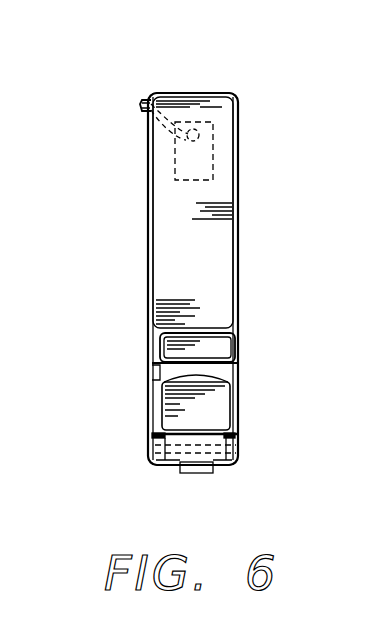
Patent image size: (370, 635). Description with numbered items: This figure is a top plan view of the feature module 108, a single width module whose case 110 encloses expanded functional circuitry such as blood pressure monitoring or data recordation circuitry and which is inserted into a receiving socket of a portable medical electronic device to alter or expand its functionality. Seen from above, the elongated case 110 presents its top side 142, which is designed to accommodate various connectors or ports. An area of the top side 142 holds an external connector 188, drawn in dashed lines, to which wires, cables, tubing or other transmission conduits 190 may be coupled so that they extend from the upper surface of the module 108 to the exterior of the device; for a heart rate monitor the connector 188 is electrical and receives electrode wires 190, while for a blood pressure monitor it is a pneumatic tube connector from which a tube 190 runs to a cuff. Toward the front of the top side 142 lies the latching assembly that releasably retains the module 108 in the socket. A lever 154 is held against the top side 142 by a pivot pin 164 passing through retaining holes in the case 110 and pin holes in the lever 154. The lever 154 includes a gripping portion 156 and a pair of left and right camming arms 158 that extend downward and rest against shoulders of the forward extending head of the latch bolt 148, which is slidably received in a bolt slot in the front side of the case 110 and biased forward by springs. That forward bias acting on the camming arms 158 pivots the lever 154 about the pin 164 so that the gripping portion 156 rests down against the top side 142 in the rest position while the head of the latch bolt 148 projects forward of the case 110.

The feature module 108 is at (86, 197).
The case 110 is at (233, 94).
The top side 142 is at (238, 220).
The latch bolt 148 is at (197, 474).
The lever 154 is at (238, 393).
The gripping portion 156 is at (214, 373).
The camming arms 158 is at (160, 463).
The pivot pin 164 is at (240, 454).
The external connector 188 is at (213, 151).
The transmission conduits 190 is at (145, 100).